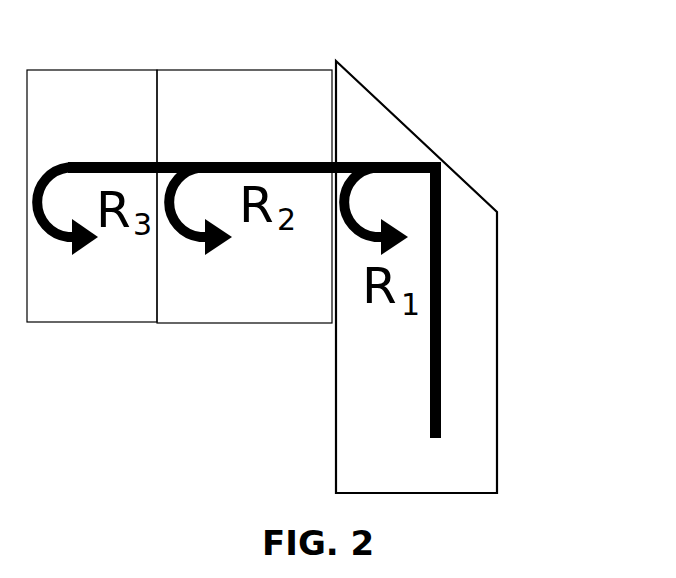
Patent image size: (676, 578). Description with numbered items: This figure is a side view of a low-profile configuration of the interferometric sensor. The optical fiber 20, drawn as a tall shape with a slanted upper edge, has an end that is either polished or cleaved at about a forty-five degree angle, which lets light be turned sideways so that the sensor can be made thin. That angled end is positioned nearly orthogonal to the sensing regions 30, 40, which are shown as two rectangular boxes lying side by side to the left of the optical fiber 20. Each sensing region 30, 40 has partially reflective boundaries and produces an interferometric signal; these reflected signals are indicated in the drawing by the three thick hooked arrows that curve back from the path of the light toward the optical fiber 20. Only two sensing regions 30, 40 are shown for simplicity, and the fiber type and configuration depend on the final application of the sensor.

The optical fiber 20 is at (470, 252).
The sensing region 30 is at (227, 115).
The sensing region 40 is at (93, 115).